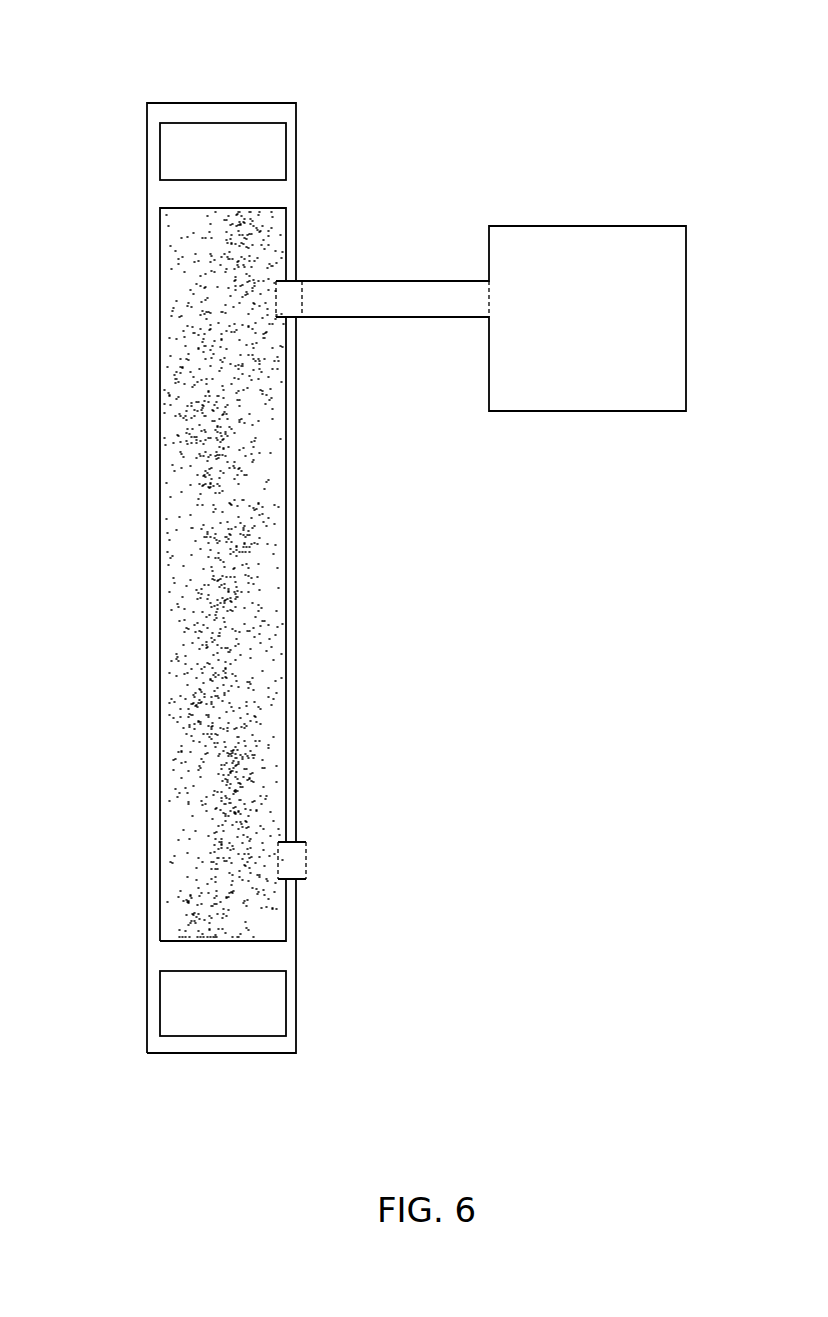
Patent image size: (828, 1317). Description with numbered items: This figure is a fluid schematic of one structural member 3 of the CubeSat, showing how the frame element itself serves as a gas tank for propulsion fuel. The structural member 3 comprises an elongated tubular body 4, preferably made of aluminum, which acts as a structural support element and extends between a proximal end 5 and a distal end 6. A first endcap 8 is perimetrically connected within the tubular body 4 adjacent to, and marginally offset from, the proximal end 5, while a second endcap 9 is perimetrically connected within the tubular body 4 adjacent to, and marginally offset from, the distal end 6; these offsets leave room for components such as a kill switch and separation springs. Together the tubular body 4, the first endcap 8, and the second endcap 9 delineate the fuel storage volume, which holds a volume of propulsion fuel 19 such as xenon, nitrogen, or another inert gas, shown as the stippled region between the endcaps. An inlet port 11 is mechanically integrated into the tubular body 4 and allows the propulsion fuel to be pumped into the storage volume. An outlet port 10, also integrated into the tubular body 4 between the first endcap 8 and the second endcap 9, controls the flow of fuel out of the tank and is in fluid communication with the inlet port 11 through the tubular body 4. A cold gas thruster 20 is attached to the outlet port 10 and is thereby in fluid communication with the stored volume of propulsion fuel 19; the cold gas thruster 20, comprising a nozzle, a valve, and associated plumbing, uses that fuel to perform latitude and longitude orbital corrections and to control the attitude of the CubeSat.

The structural member 3 is at (217, 78).
The tubular body 4 is at (153, 592).
The proximal end 5 is at (96, 990).
The distal end 6 is at (104, 169).
The first endcap 8 is at (218, 962).
The second endcap 9 is at (235, 191).
The outlet port 10 is at (300, 316).
The inlet port 11 is at (300, 859).
The volume of propulsion fuel 19 is at (228, 588).
The cold gas thruster 20 is at (673, 331).